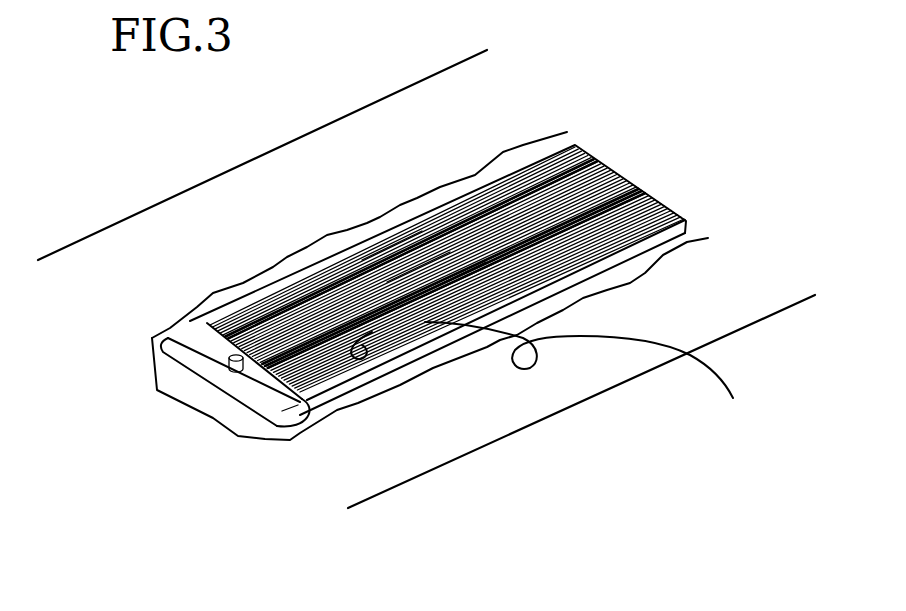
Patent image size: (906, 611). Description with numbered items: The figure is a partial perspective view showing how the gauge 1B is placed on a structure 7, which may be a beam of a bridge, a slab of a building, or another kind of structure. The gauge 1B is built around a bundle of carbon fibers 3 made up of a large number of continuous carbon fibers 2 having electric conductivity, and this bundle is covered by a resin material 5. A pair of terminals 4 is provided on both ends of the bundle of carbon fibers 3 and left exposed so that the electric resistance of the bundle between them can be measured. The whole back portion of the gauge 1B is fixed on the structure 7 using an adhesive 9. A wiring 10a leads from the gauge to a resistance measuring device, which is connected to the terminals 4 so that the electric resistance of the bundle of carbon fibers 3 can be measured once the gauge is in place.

The gauge 1B is at (423, 238).
The continuous carbon fibers 2 is at (422, 293).
The bundle of carbon fibers 3 is at (476, 240).
The terminals 4 is at (195, 337).
The resin material 5 is at (312, 272).
The structure 7 is at (428, 98).
The adhesive 9 is at (202, 397).
The wiring 10a is at (720, 375).